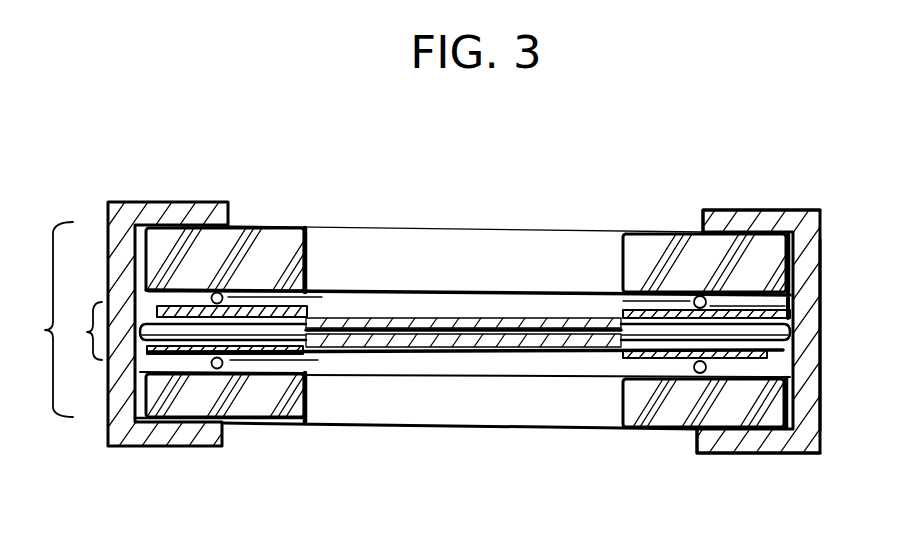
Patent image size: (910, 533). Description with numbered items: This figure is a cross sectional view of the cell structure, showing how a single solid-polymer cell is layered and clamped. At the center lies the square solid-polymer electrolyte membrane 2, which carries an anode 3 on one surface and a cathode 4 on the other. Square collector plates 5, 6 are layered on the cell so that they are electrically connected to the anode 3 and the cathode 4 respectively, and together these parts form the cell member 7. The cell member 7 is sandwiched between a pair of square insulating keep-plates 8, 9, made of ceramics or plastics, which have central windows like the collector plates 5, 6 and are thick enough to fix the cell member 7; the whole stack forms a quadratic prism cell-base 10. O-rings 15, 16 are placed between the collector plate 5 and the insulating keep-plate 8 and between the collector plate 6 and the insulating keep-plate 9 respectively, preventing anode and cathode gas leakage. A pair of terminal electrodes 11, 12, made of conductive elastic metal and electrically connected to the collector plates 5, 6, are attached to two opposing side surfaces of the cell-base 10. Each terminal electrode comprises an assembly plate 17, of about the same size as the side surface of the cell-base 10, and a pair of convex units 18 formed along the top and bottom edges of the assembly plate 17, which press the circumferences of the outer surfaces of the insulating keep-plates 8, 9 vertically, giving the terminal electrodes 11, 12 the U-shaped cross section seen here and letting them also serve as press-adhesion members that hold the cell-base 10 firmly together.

The solid-polymer electrolyte membrane 2 is at (383, 330).
The anode 3 is at (448, 317).
The cathode 4 is at (428, 347).
The collector plate 5 is at (333, 290).
The collector plate 6 is at (297, 352).
The cell member 7 is at (83, 331).
The insulating keep-plate 8 is at (238, 227).
The insulating keep-plate 9 is at (237, 410).
The cell-base 10 is at (38, 319).
The terminal electrode 11 is at (820, 228).
The terminal electrode 12 is at (106, 199).
The o-ring 15 is at (232, 298).
The o-ring 16 is at (228, 358).
The assembly plate 17 is at (820, 372).
The convex unit 18 is at (731, 212).